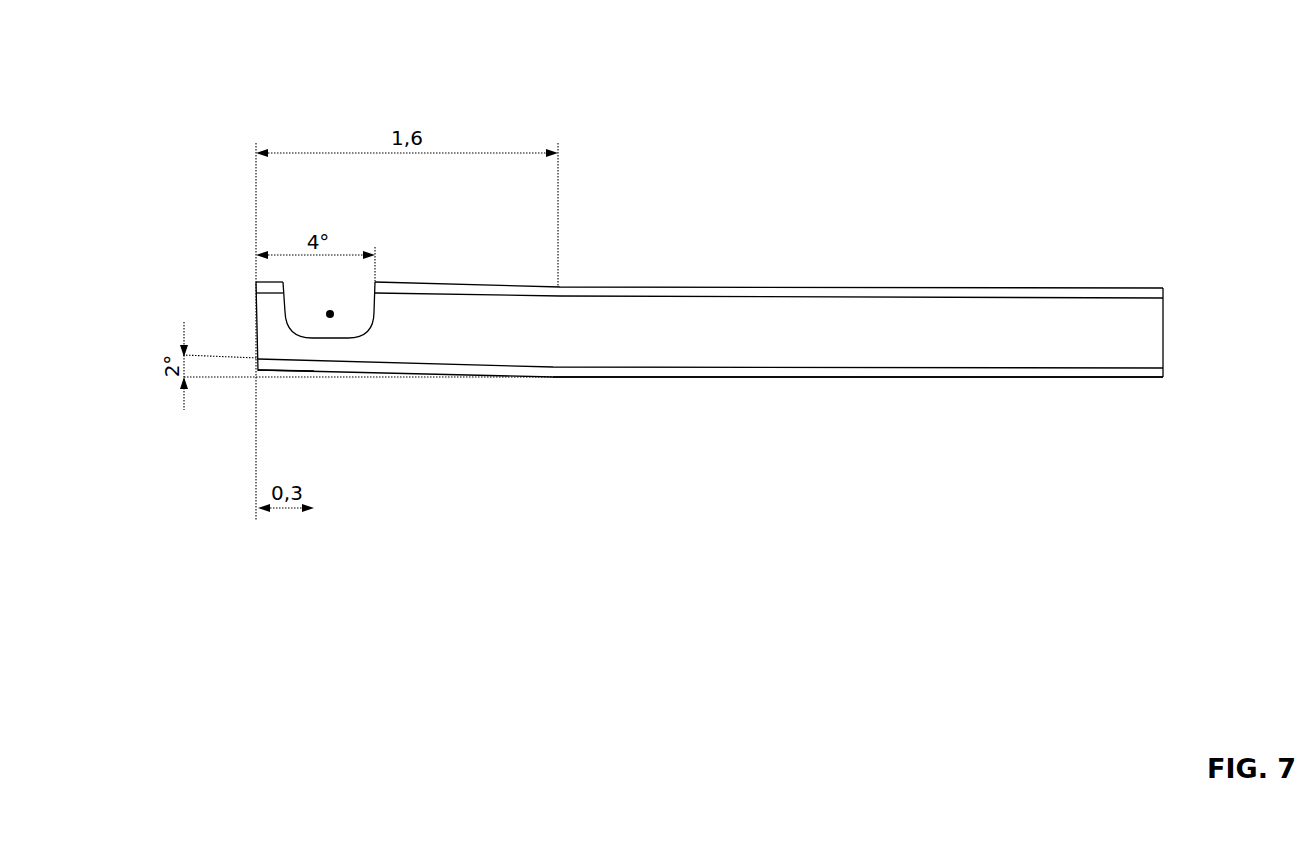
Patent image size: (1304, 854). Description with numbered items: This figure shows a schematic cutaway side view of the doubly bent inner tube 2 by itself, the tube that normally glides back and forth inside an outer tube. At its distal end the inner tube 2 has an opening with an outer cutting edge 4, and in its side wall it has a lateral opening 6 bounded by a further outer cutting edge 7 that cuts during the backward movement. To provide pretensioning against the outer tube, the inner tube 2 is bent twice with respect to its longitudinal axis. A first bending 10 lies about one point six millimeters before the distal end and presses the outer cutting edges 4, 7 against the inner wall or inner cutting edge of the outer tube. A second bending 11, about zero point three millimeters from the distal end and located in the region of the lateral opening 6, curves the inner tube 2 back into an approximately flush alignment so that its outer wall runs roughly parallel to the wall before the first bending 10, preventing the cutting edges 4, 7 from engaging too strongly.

The inner tube 2 is at (832, 288).
The outer cutting edge 4 is at (256, 282).
The lateral opening 6 is at (329, 314).
The outer cutting edge 7 is at (284, 282).
The first bending 10 is at (553, 383).
The second bending 11 is at (314, 369).